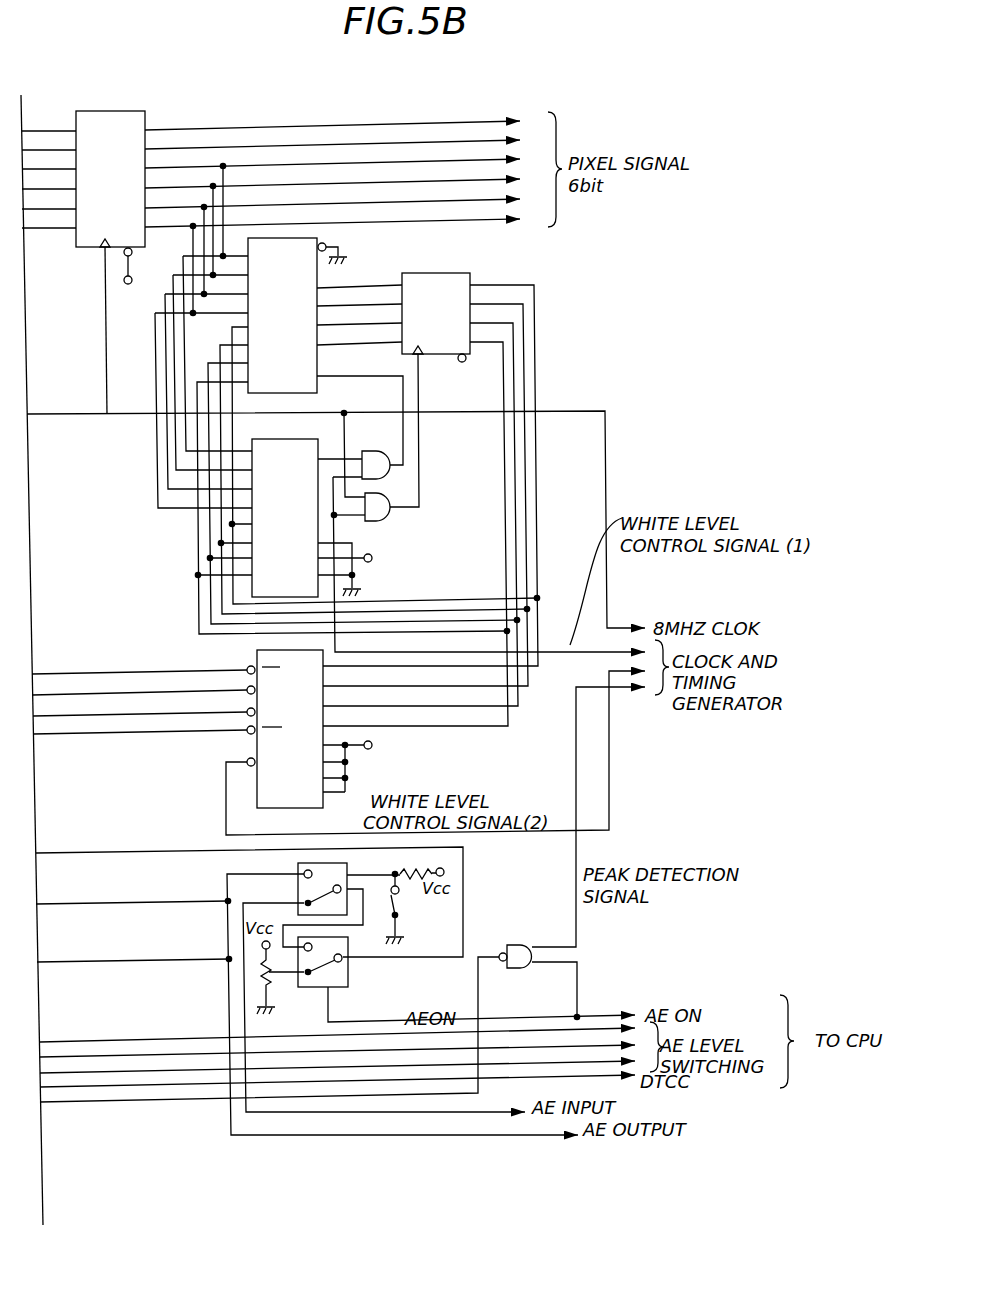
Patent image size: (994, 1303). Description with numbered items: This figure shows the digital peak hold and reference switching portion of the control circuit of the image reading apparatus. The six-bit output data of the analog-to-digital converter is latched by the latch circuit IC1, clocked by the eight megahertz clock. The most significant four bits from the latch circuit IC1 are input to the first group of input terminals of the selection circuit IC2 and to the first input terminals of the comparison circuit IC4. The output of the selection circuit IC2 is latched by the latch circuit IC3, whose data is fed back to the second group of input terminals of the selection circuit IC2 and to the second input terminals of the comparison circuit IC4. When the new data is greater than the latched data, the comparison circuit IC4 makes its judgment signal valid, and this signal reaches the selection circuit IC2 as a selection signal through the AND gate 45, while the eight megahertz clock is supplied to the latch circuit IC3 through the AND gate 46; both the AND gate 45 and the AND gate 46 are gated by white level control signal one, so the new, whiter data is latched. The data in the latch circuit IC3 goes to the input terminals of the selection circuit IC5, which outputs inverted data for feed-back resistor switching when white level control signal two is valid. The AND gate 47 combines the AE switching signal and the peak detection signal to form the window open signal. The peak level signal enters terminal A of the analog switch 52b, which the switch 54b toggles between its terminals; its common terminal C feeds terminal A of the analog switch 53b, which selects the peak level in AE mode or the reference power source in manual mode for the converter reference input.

The latch circuit IC1 is at (147, 113).
The selection circuit IC2 is at (318, 285).
The latch circuit IC3 is at (430, 273).
The comparison circuit IC4 is at (254, 442).
The selection circuit IC5 is at (257, 661).
The AND gate 45 is at (373, 452).
The AND gate 46 is at (383, 521).
The AND gate 47 is at (519, 945).
The analog switch 52b is at (298, 871).
The analog switch 53b is at (343, 987).
The switch 54b is at (398, 905).